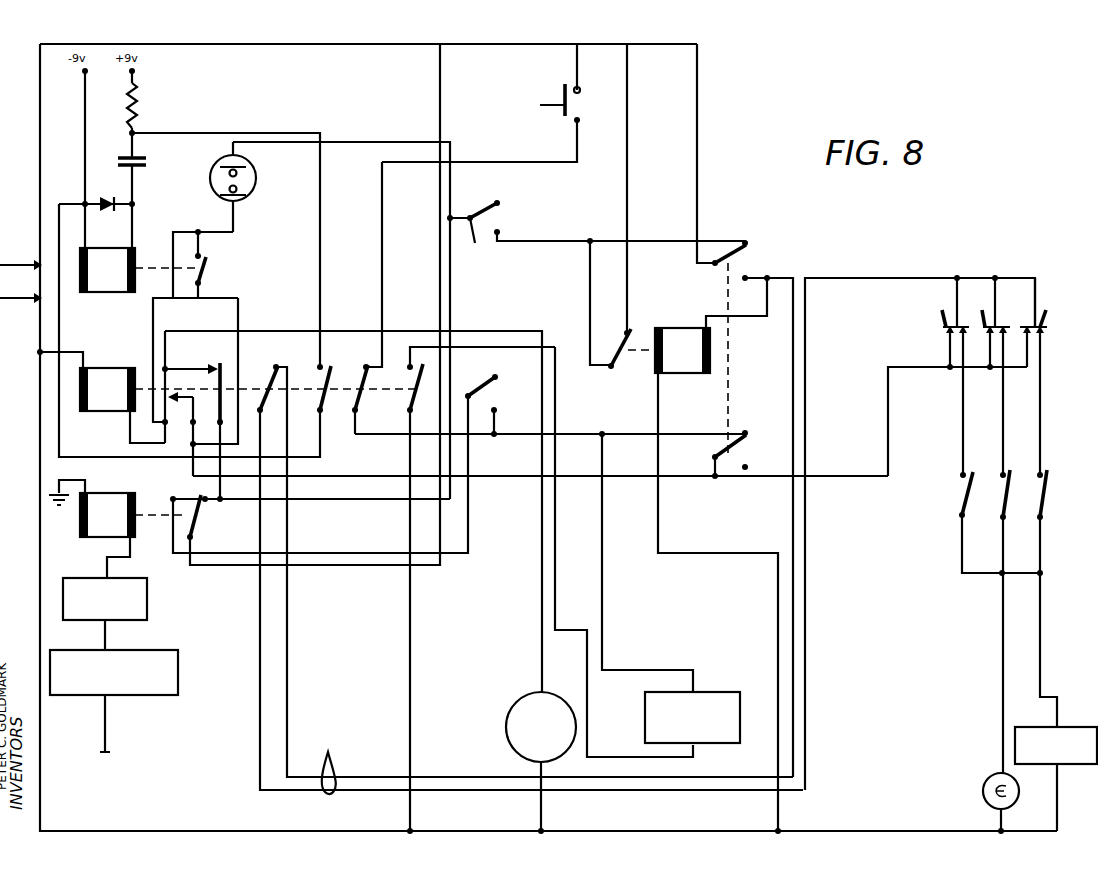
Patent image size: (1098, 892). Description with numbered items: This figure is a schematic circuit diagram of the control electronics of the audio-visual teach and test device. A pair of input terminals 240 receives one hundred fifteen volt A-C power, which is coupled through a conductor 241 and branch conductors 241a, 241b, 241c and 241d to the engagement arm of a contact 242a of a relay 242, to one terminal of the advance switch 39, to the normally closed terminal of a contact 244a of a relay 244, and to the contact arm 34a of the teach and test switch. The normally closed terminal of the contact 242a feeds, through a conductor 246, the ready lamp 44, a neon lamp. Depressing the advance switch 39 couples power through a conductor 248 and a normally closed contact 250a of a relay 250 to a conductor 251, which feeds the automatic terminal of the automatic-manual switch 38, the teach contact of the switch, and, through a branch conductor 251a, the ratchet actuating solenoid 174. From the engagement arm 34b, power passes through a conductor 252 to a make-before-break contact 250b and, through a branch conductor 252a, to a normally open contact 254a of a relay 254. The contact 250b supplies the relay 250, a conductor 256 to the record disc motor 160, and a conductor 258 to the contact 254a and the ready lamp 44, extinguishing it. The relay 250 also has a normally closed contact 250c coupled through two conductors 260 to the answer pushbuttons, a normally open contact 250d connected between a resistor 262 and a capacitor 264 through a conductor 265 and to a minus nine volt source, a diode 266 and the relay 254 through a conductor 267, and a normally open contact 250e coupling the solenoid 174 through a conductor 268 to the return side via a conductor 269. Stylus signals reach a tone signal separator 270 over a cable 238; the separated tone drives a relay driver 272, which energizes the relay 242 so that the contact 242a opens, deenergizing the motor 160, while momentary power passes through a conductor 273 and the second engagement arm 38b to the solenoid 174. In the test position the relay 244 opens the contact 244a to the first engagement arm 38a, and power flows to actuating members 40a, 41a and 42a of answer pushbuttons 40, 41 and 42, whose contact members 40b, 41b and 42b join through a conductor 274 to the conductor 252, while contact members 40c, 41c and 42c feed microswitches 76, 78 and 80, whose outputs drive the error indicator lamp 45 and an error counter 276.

The contact arm 34a is at (757, 252).
The engagement arm 34b is at (706, 447).
The automatic-manual switch 38 is at (478, 398).
The first engagement arm 38a is at (488, 208).
The second engagement arm 38b is at (490, 387).
The advance switch 39 is at (563, 112).
The answer pushbutton 40 is at (934, 328).
The actuating member 40a is at (929, 305).
The contact member 40b is at (948, 350).
The contact member 40c is at (962, 357).
The answer pushbutton 41 is at (1007, 318).
The actuating member 41a is at (979, 305).
The contact member 41b is at (988, 355).
The contact member 41c is at (1003, 355).
The answer pushbutton 42 is at (1067, 320).
The actuating member 42a is at (1063, 305).
The contact member 42b is at (1043, 356).
The contact member 42c is at (1045, 350).
The ready lamp 44 is at (257, 178).
The error indicator lamp 45 is at (983, 788).
The microswitch 76 is at (960, 500).
The microswitch 78 is at (990, 621).
The microswitch 80 is at (1046, 503).
The record disc motor 160 is at (505, 727).
The ratchet actuating solenoid 174 is at (724, 692).
The cable 238 is at (105, 733).
The input terminals 240 is at (21, 281).
The conductor 241 is at (279, 45).
The branch conductor 241a is at (439, 72).
The branch conductor 241b is at (576, 72).
The branch conductor 241c is at (628, 98).
The branch conductor 241d is at (699, 80).
The relay 242 is at (113, 492).
The contact 242a is at (197, 518).
The relay 244 is at (690, 374).
The contact 244a is at (631, 337).
The conductor 246 is at (358, 500).
The conductor 248 is at (321, 226).
The relay 250 is at (100, 412).
The normally closed contact 250a is at (442, 410).
The make-before-break contact 250b is at (230, 376).
The normally closed contact 250c is at (268, 380).
The normally open contact 250d is at (335, 378).
The normally open contact 250e is at (340, 440).
The conductor 251 is at (518, 436).
The branch conductor 251a is at (603, 597).
The conductor 252 is at (512, 478).
The branch conductor 252a is at (238, 303).
The relay 254 is at (110, 292).
The normally open contact 254a is at (211, 252).
The conductor 256 is at (346, 330).
The conductor 258 is at (153, 318).
The conductors 260 is at (337, 762).
The resistor 262 is at (135, 110).
The capacitor 264 is at (147, 164).
The conductor 265 is at (302, 134).
The diode 266 is at (97, 191).
The conductor 267 is at (56, 211).
The conductor 268 is at (557, 405).
The conductor 269 is at (408, 673).
The tone signal separator 270 is at (178, 673).
The relay driver 272 is at (147, 600).
The conductor 273 is at (456, 556).
The conductor 274 is at (887, 408).
The error counter 276 is at (1078, 727).